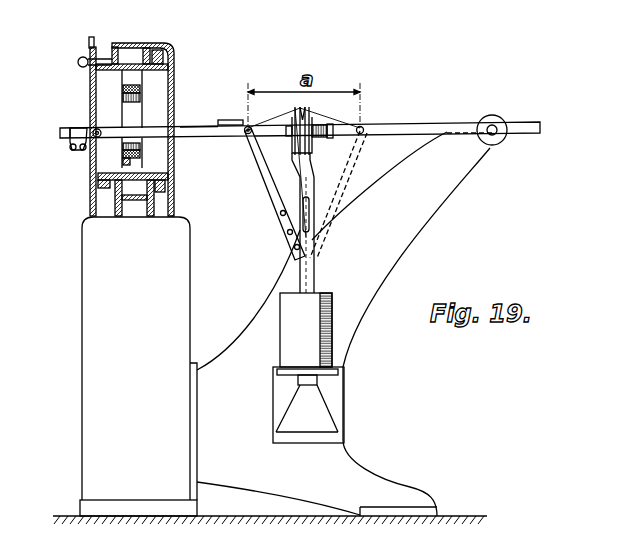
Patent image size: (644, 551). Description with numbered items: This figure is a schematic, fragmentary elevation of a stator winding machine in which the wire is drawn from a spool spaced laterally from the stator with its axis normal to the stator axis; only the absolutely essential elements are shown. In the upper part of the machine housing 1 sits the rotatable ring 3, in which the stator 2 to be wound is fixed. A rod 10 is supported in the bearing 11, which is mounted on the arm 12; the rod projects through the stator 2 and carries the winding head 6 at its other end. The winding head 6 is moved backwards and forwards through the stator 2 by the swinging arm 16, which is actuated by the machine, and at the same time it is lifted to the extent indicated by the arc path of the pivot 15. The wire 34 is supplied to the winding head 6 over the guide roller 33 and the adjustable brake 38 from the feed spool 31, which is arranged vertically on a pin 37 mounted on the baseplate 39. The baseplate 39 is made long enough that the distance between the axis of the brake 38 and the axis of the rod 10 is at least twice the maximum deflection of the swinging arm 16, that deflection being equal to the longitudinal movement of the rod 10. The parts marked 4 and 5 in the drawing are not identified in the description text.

The machine housing 1 is at (138, 366).
The stator 2 is at (140, 89).
The rotatable ring 3 is at (174, 56).
The knob handle 4 is at (78, 61).
The rod 5 is at (89, 44).
The winding head 6 is at (74, 128).
The rod 10 is at (428, 124).
The bearing 11 is at (494, 127).
The arm 12 is at (408, 217).
The pivot 15 is at (245, 134).
The swinging arm 16 is at (271, 206).
The feed spool 31 is at (328, 323).
The guide roller 33 is at (234, 120).
The wire 34 is at (200, 127).
The pin 37 is at (298, 280).
The adjustable brake 38 is at (305, 112).
The baseplate 39 is at (336, 408).